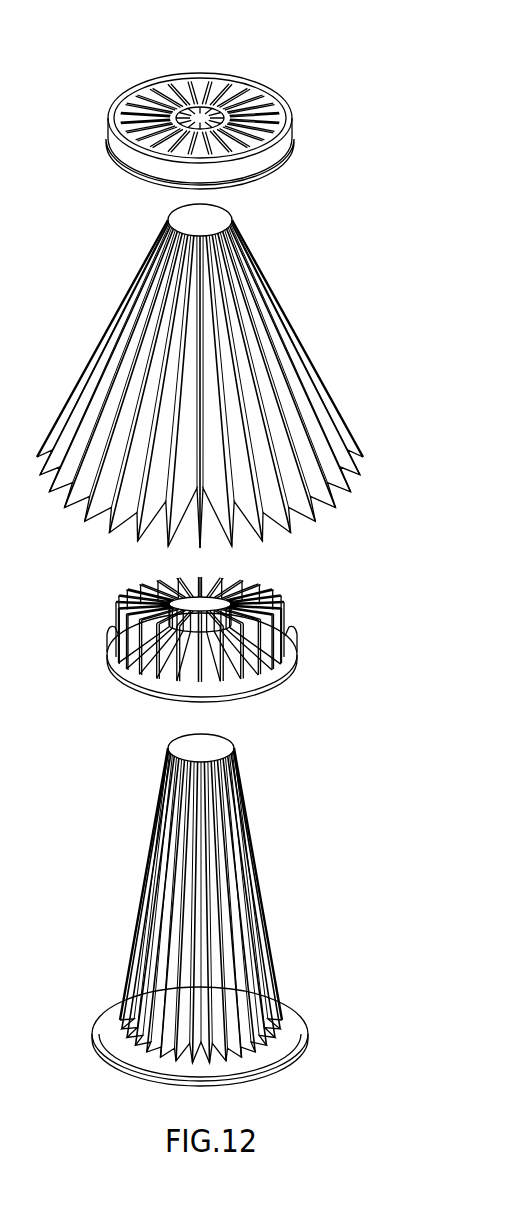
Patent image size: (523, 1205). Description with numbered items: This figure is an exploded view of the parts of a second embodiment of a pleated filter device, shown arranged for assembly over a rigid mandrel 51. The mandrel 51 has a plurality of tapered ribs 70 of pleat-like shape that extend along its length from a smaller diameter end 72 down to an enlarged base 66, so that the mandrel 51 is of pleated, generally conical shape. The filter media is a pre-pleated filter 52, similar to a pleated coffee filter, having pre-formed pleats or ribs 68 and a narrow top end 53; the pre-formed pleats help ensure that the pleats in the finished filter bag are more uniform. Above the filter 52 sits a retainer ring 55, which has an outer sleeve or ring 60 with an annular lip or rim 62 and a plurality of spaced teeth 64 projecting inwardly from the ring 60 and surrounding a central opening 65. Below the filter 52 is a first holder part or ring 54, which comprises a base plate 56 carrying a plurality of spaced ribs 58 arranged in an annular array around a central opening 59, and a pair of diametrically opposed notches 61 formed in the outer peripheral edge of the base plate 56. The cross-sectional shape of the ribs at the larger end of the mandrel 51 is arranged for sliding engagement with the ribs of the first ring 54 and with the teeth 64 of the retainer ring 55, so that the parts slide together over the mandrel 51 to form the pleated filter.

The mandrel 51 is at (207, 910).
The pre-pleated filter 52 is at (235, 373).
The top end of outer filter element 53 is at (183, 218).
The first holder part 54 is at (213, 654).
The retainer ring 55 is at (226, 125).
The base plate 56 is at (265, 668).
The ribs 58 is at (180, 670).
The central opening 59 is at (167, 583).
The outer sleeve 60 is at (267, 157).
The notches 61 is at (117, 647).
The annular lip 62 is at (243, 186).
The teeth 64 is at (241, 86).
The central opening 65 is at (173, 80).
The enlarged base 66 is at (290, 1017).
The pre-formed pleats 68 is at (345, 473).
The tapered ribs 70 is at (172, 913).
The smaller diameter end 72 is at (194, 744).